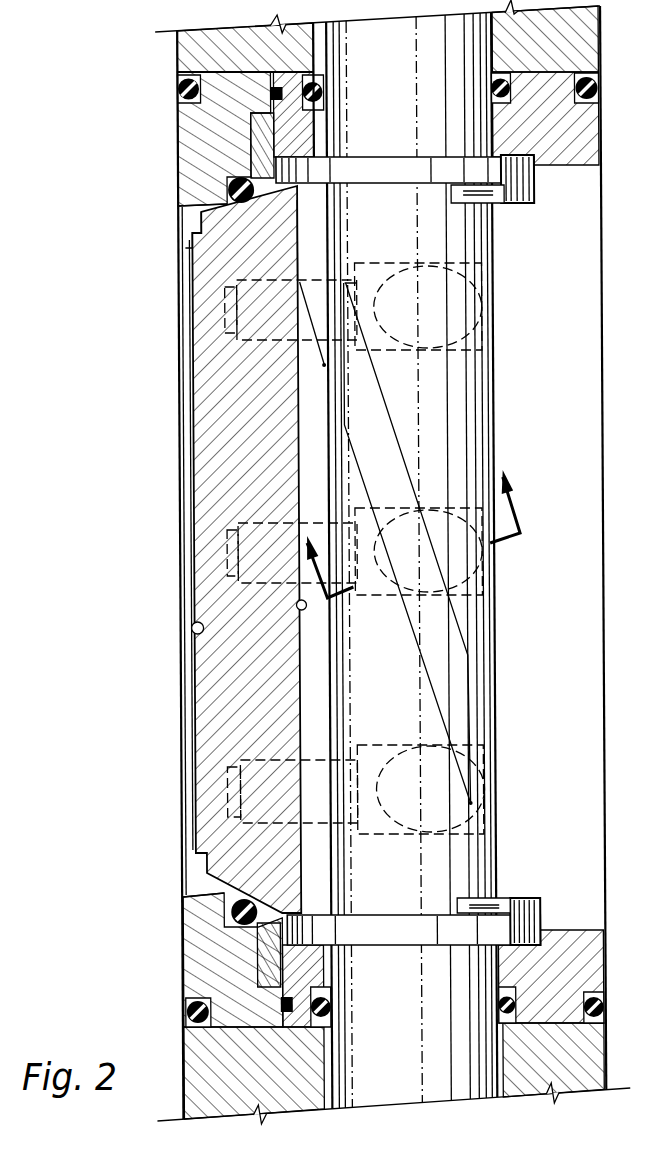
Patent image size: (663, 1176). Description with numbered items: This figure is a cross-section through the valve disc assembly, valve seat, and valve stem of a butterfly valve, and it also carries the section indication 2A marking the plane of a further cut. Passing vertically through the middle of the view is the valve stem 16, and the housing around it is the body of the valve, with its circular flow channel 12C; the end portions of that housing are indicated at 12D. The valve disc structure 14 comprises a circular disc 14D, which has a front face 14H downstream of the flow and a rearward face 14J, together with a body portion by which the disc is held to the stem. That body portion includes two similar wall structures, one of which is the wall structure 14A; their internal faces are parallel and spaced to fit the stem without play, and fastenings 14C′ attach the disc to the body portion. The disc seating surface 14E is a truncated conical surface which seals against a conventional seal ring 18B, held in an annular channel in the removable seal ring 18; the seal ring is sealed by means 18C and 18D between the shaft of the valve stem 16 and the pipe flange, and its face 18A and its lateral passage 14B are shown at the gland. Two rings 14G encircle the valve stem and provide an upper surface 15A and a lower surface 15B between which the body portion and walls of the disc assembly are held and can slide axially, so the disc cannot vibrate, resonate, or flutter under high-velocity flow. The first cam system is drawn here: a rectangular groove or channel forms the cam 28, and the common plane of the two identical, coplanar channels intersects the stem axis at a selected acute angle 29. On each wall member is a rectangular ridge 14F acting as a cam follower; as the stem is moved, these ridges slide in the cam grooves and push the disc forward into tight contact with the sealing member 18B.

The circular flow channel 12C is at (563, 166).
The housing end block 12D is at (332, 40).
The valve disc structure 14 is at (220, 408).
The wall structure 14A is at (305, 367).
The transverse bore in tube 14B is at (390, 742).
The lateral passage 14C′ is at (232, 546).
The circular disc 14D is at (208, 458).
The disc seating surface 14E is at (220, 217).
The rectangular ridge 14F is at (308, 238).
The ring 14G is at (533, 192).
The front face 14H is at (188, 631).
The rearward face 14J is at (293, 605).
The upper surface 15A is at (372, 192).
The lower surface 15B is at (388, 909).
The valve stem 16 is at (398, 115).
The seal ring 18 is at (177, 148).
The gland face 18A is at (177, 180).
The seal ring 18B is at (222, 206).
The seal 18C is at (323, 88).
The seal 18D is at (178, 90).
The cam 28 is at (378, 446).
The angle 29 is at (299, 656).
The section line 2A is at (431, 558).